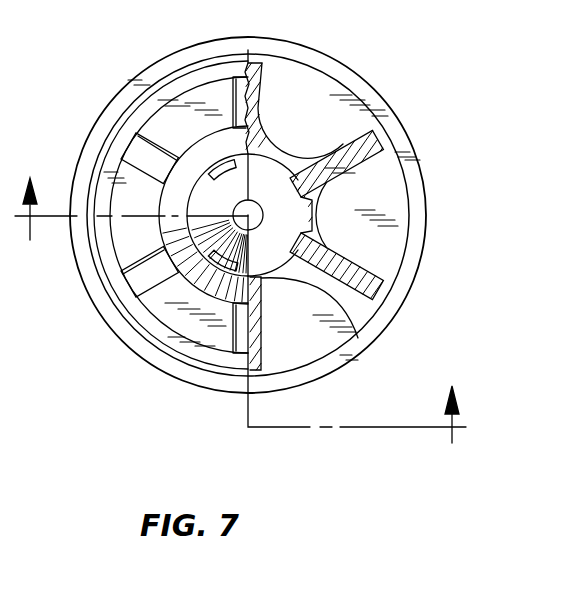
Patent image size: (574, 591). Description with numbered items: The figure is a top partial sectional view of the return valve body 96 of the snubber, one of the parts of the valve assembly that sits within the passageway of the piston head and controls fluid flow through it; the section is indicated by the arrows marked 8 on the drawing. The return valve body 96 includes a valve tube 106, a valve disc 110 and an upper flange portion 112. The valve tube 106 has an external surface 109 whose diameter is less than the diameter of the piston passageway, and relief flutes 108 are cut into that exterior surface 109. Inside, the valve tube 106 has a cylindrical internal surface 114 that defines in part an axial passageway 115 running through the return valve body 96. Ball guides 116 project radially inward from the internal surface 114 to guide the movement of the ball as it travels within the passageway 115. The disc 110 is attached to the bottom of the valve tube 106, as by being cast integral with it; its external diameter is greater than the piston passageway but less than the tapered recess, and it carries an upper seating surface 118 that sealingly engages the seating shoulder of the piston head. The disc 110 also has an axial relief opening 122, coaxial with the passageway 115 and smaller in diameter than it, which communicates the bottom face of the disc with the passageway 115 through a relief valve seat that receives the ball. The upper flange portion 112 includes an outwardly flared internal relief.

The return valve body 96 is at (87, 89).
The section line 8- 8 is at (237, 299).
The valve tube 106 is at (268, 282).
The relief flutes 108 is at (357, 330).
The external surface 109 is at (388, 291).
The valve disc 110 is at (393, 325).
The upper flange portion 112 is at (160, 307).
The cylindrical internal surface 114 is at (188, 206).
The axial passageway 115 is at (284, 260).
The ball guides 116 is at (240, 175).
The upper seating surface 118 is at (328, 372).
The axial relief opening 122 is at (273, 191).